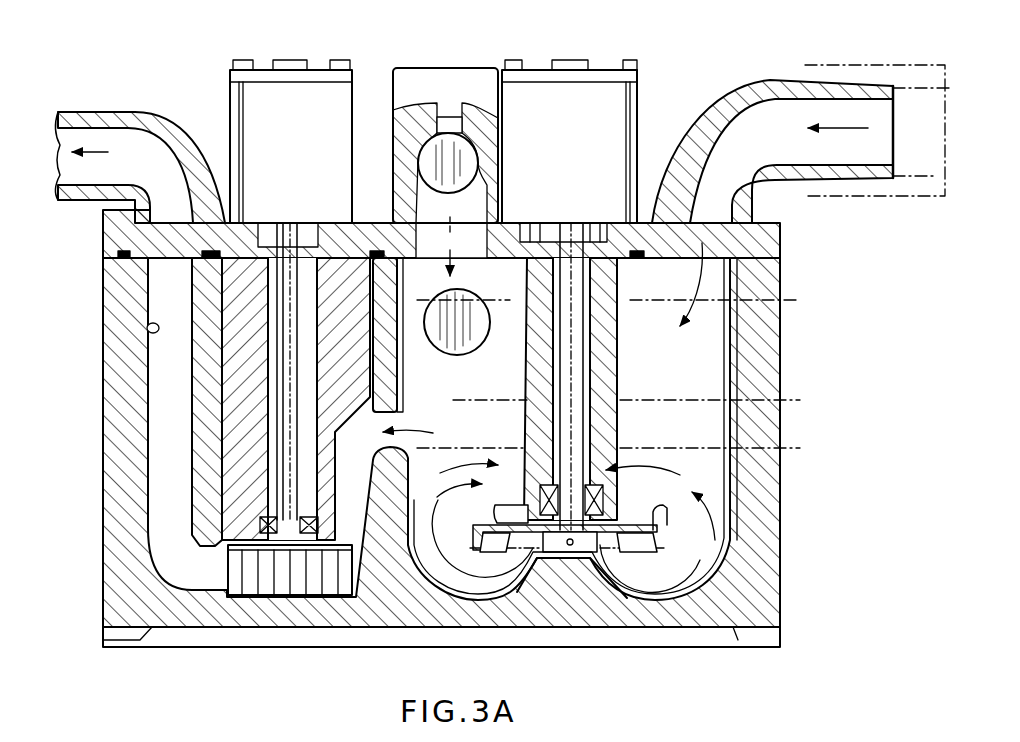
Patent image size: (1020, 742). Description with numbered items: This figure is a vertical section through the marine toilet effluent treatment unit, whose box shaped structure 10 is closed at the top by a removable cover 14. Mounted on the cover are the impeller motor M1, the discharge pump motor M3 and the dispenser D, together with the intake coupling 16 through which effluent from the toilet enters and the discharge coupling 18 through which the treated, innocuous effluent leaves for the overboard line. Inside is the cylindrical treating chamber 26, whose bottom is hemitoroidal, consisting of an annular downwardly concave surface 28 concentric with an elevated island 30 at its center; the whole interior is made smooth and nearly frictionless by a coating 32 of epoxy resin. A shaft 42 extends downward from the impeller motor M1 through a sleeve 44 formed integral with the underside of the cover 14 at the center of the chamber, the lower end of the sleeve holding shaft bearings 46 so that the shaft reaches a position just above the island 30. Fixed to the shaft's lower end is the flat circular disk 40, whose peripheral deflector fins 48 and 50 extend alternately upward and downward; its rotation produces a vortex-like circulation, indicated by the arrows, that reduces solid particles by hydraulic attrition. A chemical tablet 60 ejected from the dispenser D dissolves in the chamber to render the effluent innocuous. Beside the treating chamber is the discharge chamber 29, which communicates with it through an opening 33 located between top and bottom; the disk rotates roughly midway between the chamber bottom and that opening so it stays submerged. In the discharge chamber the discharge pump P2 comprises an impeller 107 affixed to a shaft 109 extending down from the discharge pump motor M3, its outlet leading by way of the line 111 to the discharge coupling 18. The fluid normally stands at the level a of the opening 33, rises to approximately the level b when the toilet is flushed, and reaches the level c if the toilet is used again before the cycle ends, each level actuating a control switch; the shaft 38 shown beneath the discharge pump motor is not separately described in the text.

The box shaped structure 10 is at (100, 398).
The removable cover 14 is at (107, 237).
The intake coupling 16 is at (758, 84).
The discharge coupling 18 is at (92, 114).
The treating chamber 26 is at (713, 378).
The annular downwardly concave surface 28 is at (733, 551).
The discharge chamber 29 is at (160, 432).
The elevated island 30 is at (568, 556).
The coating 32 is at (413, 463).
The opening 33 is at (402, 423).
The motor shaft 38 is at (287, 222).
The flat circular disk 40 is at (622, 524).
The shaft 42 is at (562, 318).
The sleeve 44 is at (603, 368).
The shaft bearings 46 is at (540, 500).
The deflector fin 48 is at (660, 522).
The deflector fin 50 is at (657, 545).
The tablet 60 is at (465, 350).
The impeller 107 is at (262, 583).
The shaft 109 is at (290, 290).
The line 111 is at (148, 328).
The dispenser D is at (422, 66).
The discharge pump P2 is at (226, 572).
The impeller motor M1 is at (592, 116).
The discharge pump motor M3 is at (312, 116).
The level a is at (820, 460).
The level b is at (820, 414).
The level c is at (820, 310).